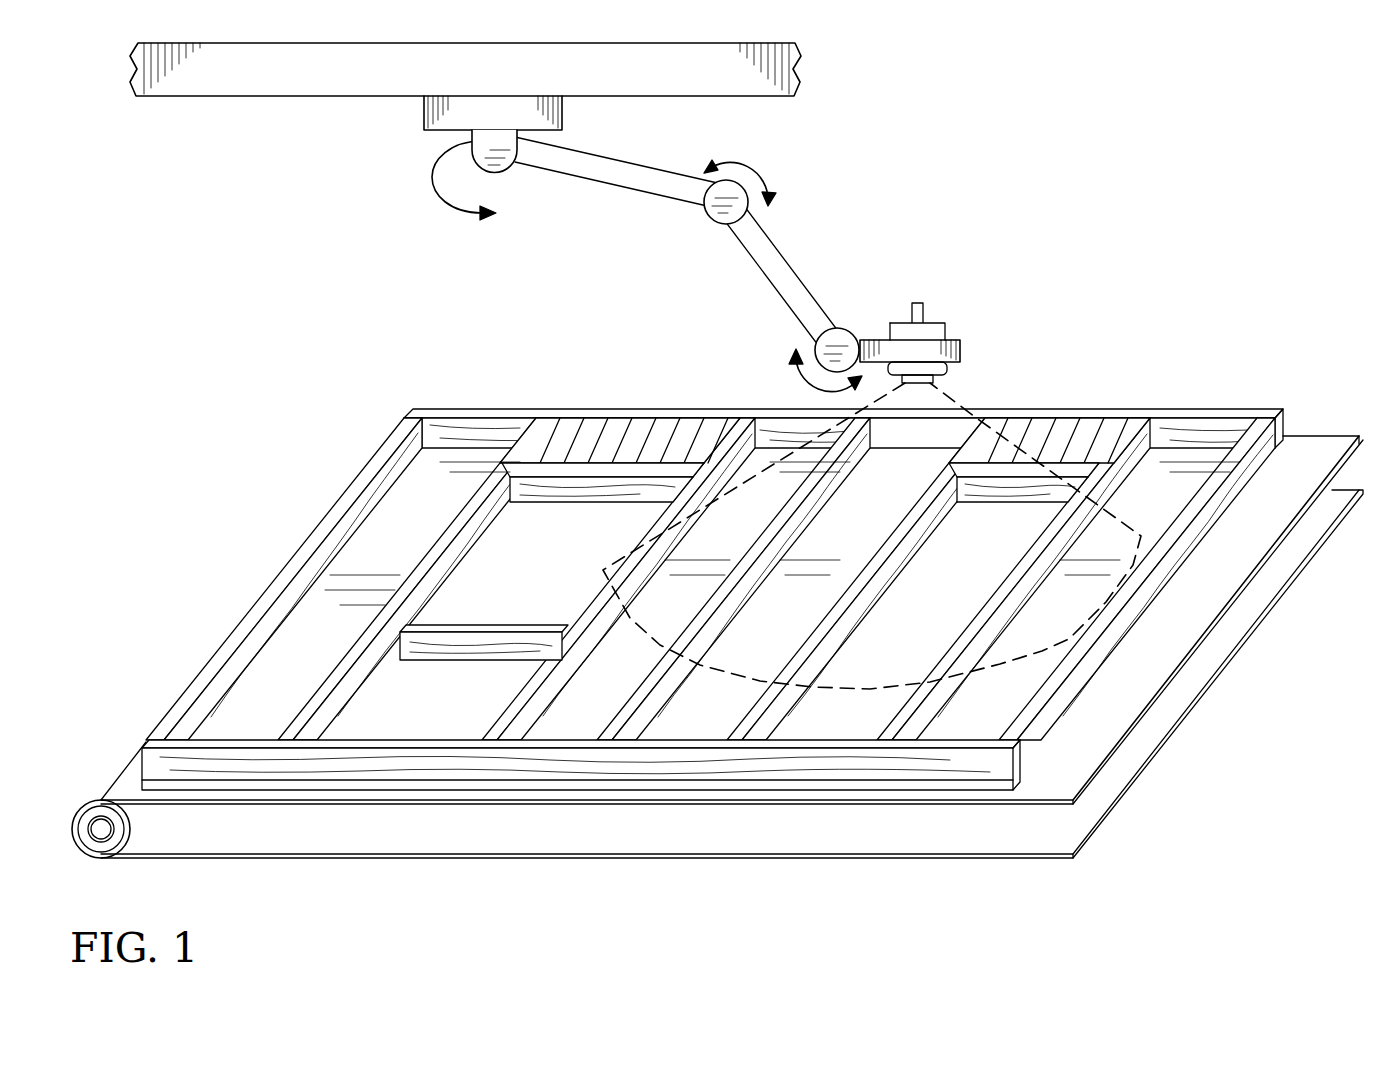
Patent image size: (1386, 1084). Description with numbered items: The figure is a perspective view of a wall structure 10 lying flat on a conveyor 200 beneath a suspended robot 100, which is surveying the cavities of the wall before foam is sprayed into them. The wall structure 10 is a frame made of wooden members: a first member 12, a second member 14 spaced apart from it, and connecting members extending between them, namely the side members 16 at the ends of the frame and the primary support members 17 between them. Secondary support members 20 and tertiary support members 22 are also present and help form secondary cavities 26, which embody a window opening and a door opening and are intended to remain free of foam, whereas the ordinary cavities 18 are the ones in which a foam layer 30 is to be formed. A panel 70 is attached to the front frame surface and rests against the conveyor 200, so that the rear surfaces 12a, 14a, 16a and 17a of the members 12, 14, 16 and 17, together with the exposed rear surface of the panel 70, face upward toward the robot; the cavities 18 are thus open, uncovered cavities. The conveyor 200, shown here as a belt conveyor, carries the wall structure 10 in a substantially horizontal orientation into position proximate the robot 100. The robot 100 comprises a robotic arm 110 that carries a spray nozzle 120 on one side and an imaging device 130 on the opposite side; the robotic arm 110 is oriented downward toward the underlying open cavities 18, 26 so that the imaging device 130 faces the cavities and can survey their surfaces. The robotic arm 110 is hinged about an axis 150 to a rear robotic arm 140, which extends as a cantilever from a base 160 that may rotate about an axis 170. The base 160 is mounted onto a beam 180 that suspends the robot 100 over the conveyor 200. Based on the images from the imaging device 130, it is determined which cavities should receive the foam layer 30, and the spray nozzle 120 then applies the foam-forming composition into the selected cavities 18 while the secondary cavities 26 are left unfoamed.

The wall structure 10 is at (394, 368).
The first member 12 is at (872, 399).
The rear surface of first member 12a is at (1208, 412).
The second member 14 is at (622, 815).
The rear surface of second member 14a is at (862, 732).
The side member 16 is at (382, 480).
The rear surface of side member 16a is at (292, 578).
The primary support member 17 is at (480, 426).
The rear surface of primary support member 17a is at (520, 718).
The cavity 18 is at (738, 624).
The secondary support member 20 is at (498, 498).
The tertiary support member 22 is at (588, 425).
The secondary cavity 26 is at (925, 884).
The foam layer 30 is at (773, 638).
The panel 70 is at (272, 690).
The robot 100 is at (931, 177).
The robotic arm 110 is at (788, 257).
The spray nozzle 120 is at (930, 323).
The imaging device 130 is at (953, 377).
The rear robotic arm 140 is at (597, 175).
The axis 150 is at (757, 168).
The base 160 is at (440, 117).
The axis 170 is at (428, 178).
The beam 180 is at (778, 70).
The conveyor 200 is at (282, 828).